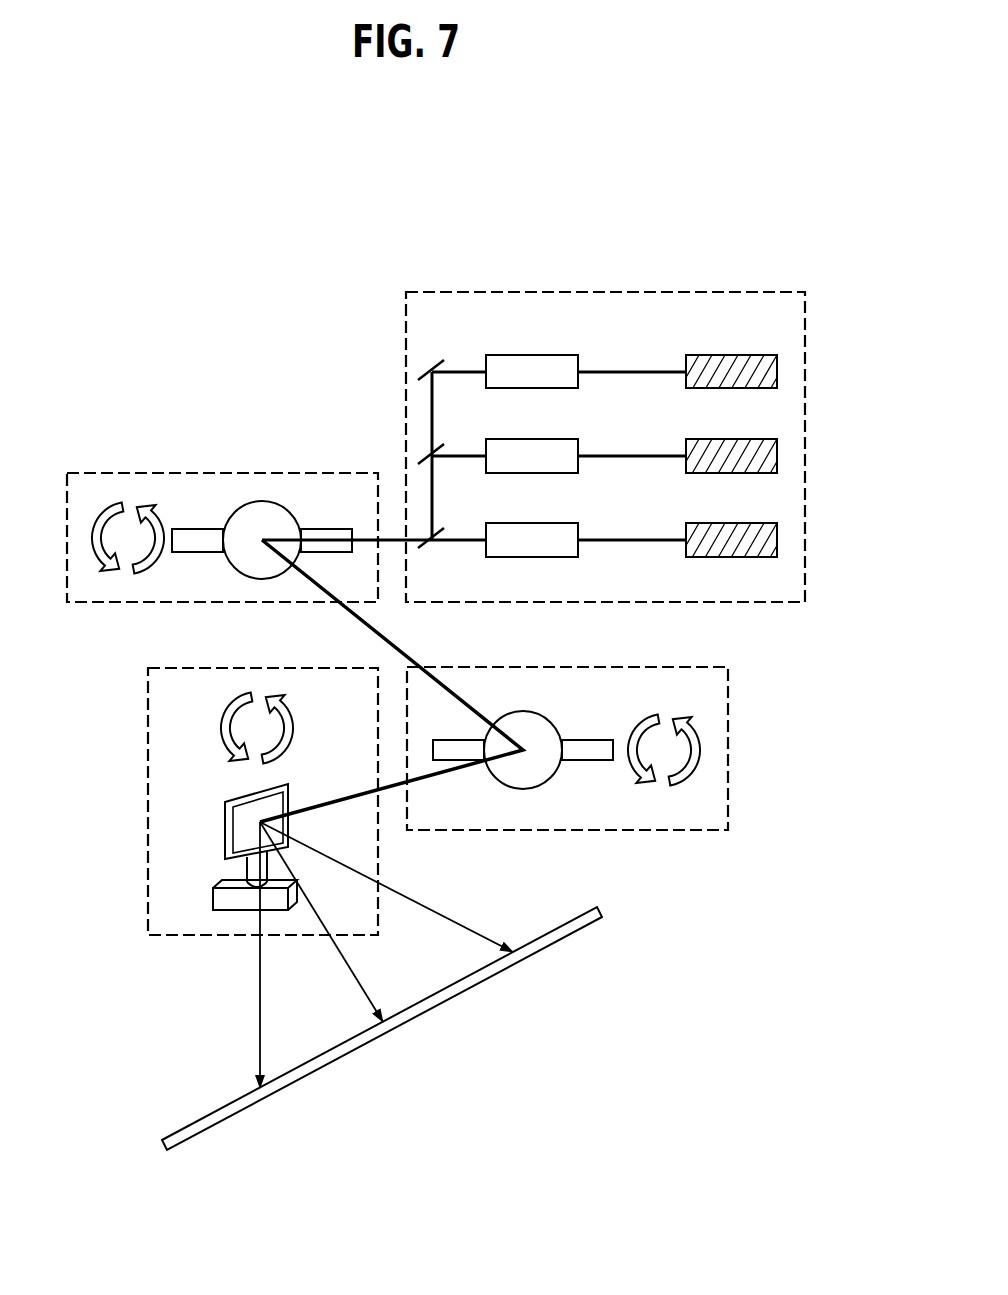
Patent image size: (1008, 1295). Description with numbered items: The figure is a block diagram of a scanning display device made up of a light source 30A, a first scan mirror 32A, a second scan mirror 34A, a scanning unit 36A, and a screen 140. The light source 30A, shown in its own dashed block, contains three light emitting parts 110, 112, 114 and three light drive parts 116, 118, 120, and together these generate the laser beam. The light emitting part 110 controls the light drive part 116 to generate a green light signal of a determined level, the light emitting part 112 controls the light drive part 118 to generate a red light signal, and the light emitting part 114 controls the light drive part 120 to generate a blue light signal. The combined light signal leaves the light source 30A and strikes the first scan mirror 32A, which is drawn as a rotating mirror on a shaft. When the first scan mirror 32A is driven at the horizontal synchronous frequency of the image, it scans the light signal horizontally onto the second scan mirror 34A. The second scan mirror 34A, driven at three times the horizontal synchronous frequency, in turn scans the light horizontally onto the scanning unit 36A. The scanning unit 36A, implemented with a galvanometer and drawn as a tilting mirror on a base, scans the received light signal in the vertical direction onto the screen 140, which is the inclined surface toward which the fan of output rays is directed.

The light source 30A is at (805, 452).
The light emitting part 110 is at (531, 357).
The light emitting part 112 is at (531, 441).
The light emitting part 114 is at (531, 525).
The light drive part 116 is at (730, 357).
The light drive part 118 is at (730, 441).
The light drive part 120 is at (730, 525).
The first scan mirror 32A is at (215, 472).
The second scan mirror 34A is at (728, 748).
The scanning unit 36A is at (148, 796).
The screen 140 is at (480, 985).